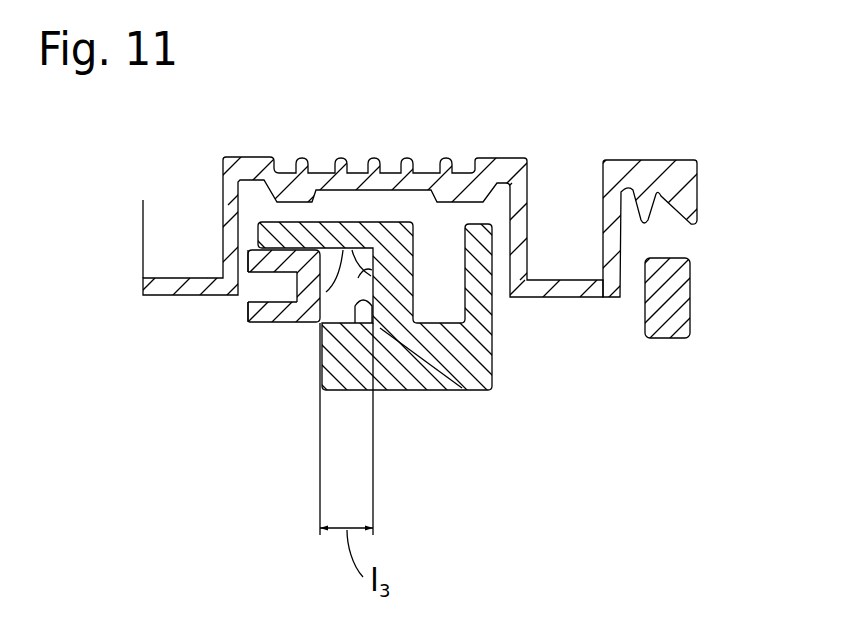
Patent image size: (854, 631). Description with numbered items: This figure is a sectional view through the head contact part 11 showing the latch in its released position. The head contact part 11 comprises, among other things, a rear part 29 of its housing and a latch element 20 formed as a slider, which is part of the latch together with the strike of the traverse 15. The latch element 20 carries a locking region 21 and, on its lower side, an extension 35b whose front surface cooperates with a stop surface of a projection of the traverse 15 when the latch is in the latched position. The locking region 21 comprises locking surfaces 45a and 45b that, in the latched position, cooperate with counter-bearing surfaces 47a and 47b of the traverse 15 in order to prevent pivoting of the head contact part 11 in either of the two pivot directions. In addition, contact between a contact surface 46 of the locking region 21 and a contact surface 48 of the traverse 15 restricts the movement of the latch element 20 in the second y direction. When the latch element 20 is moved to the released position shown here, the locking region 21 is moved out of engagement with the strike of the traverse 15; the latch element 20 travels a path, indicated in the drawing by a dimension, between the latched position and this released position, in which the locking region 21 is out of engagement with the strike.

The head contact part 11 is at (702, 140).
The traverse 15 is at (482, 351).
The latch element 20 is at (246, 262).
The locking region 21 is at (265, 322).
The rear part 29 is at (613, 152).
The extension 35b is at (688, 306).
The locking surface 45a is at (300, 323).
The locking surface 45b is at (299, 248).
The contact surface 46 is at (333, 262).
The counter-bearing surface 47a is at (362, 310).
The counter-bearing surface 47b is at (352, 262).
The contact surface 48 is at (447, 368).